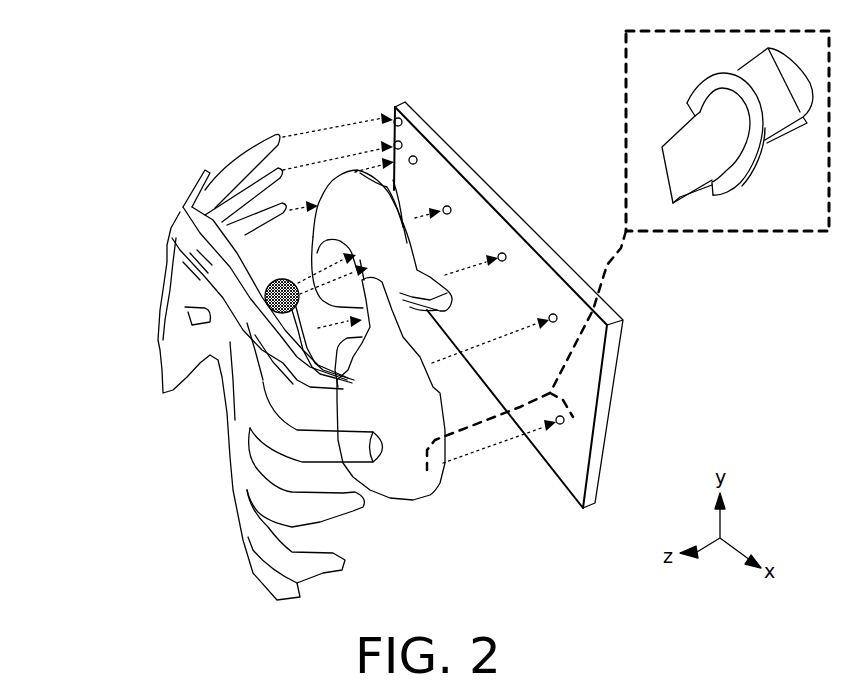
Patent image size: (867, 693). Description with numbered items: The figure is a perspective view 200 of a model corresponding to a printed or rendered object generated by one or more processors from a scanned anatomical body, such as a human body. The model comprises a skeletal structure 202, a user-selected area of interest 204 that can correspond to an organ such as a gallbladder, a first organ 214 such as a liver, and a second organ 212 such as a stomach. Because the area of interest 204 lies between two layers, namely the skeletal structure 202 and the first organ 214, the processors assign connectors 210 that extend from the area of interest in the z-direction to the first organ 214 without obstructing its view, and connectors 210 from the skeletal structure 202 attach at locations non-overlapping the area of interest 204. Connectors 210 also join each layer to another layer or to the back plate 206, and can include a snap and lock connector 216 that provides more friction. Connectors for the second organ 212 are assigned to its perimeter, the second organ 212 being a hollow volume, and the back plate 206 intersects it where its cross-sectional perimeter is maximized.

The perspective view 200 is at (112, 100).
The skeletal structure 202 is at (157, 287).
The area of interest 204 is at (268, 280).
The back plate 206 is at (526, 218).
The connectors 210 is at (287, 128).
The second organ 212 is at (416, 413).
The first organ 214 is at (378, 229).
The snap and lock connector 216 is at (606, 100).